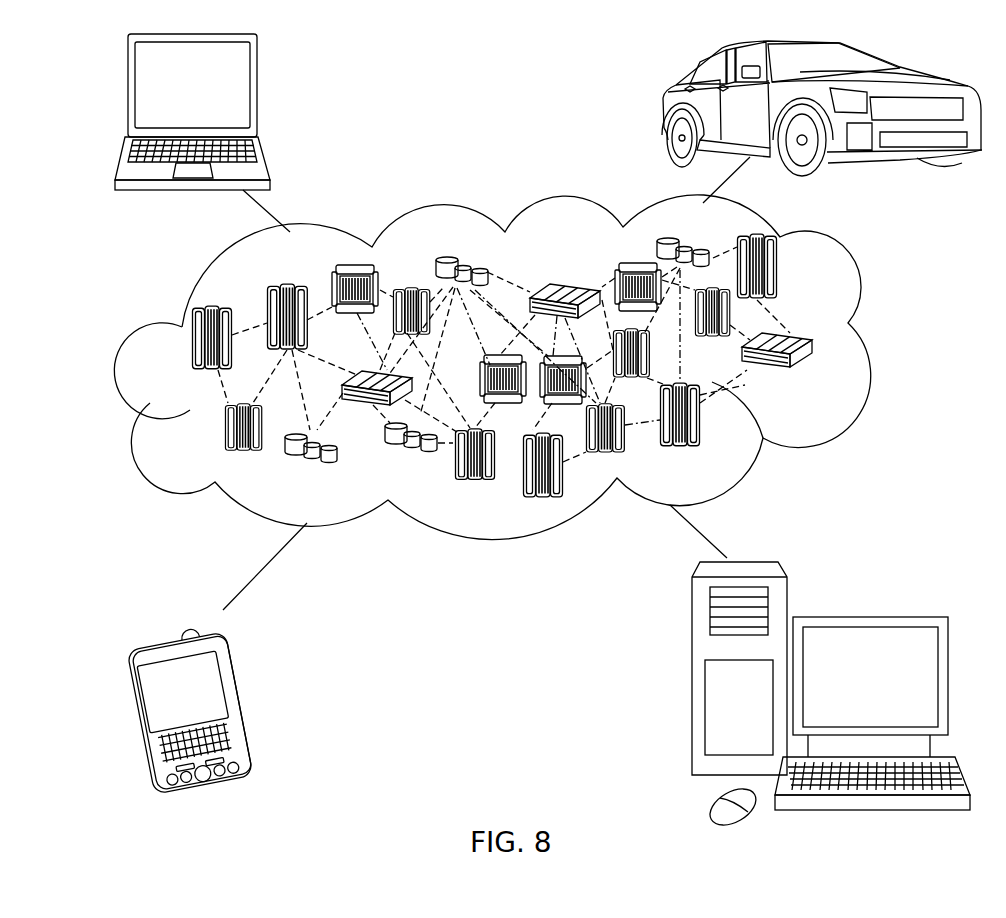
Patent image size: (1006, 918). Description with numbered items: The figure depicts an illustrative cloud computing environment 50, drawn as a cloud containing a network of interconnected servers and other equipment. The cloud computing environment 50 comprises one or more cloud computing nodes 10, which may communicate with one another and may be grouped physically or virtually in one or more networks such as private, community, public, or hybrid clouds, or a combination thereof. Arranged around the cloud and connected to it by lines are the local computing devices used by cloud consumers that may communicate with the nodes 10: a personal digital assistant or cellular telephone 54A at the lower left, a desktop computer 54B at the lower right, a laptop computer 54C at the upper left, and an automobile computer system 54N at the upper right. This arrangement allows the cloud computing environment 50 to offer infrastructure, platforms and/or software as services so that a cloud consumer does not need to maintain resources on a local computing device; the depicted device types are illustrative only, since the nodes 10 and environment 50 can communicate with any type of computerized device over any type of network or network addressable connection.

The cloud computing nodes 10 is at (812, 375).
The cloud computing environment 50 is at (866, 347).
The personal digital assistant (PDA) or cellular telephone 54A is at (247, 700).
The desktop computer 54B is at (868, 617).
The laptop computer 54C is at (257, 92).
The automobile computer system 54N is at (665, 108).